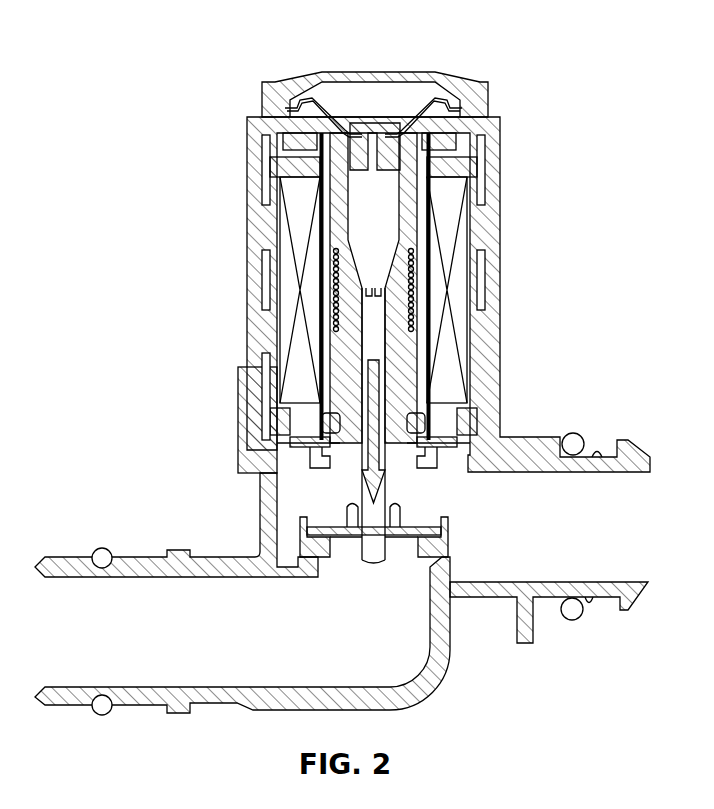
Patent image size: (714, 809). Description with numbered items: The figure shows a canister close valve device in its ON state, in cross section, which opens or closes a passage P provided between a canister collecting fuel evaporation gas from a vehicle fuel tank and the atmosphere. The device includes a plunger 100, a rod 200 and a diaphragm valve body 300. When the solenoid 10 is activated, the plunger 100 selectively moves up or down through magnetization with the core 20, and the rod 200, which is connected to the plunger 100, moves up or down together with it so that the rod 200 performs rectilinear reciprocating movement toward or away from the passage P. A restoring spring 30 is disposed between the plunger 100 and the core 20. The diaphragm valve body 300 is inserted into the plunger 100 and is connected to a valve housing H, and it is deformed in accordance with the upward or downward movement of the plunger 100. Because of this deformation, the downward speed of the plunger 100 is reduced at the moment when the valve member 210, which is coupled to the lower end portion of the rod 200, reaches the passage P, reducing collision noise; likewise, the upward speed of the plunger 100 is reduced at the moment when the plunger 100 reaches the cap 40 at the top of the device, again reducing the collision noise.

The solenoid 10 is at (462, 330).
The core 20 is at (505, 375).
The restoring spring 30 is at (338, 278).
The cap 40 is at (405, 75).
The plunger 100 is at (430, 183).
The rod 200 is at (358, 511).
The valve member 210 is at (449, 547).
The diaphragm valve body 300 is at (392, 127).
The valve housing H is at (287, 100).
The passage P is at (437, 572).